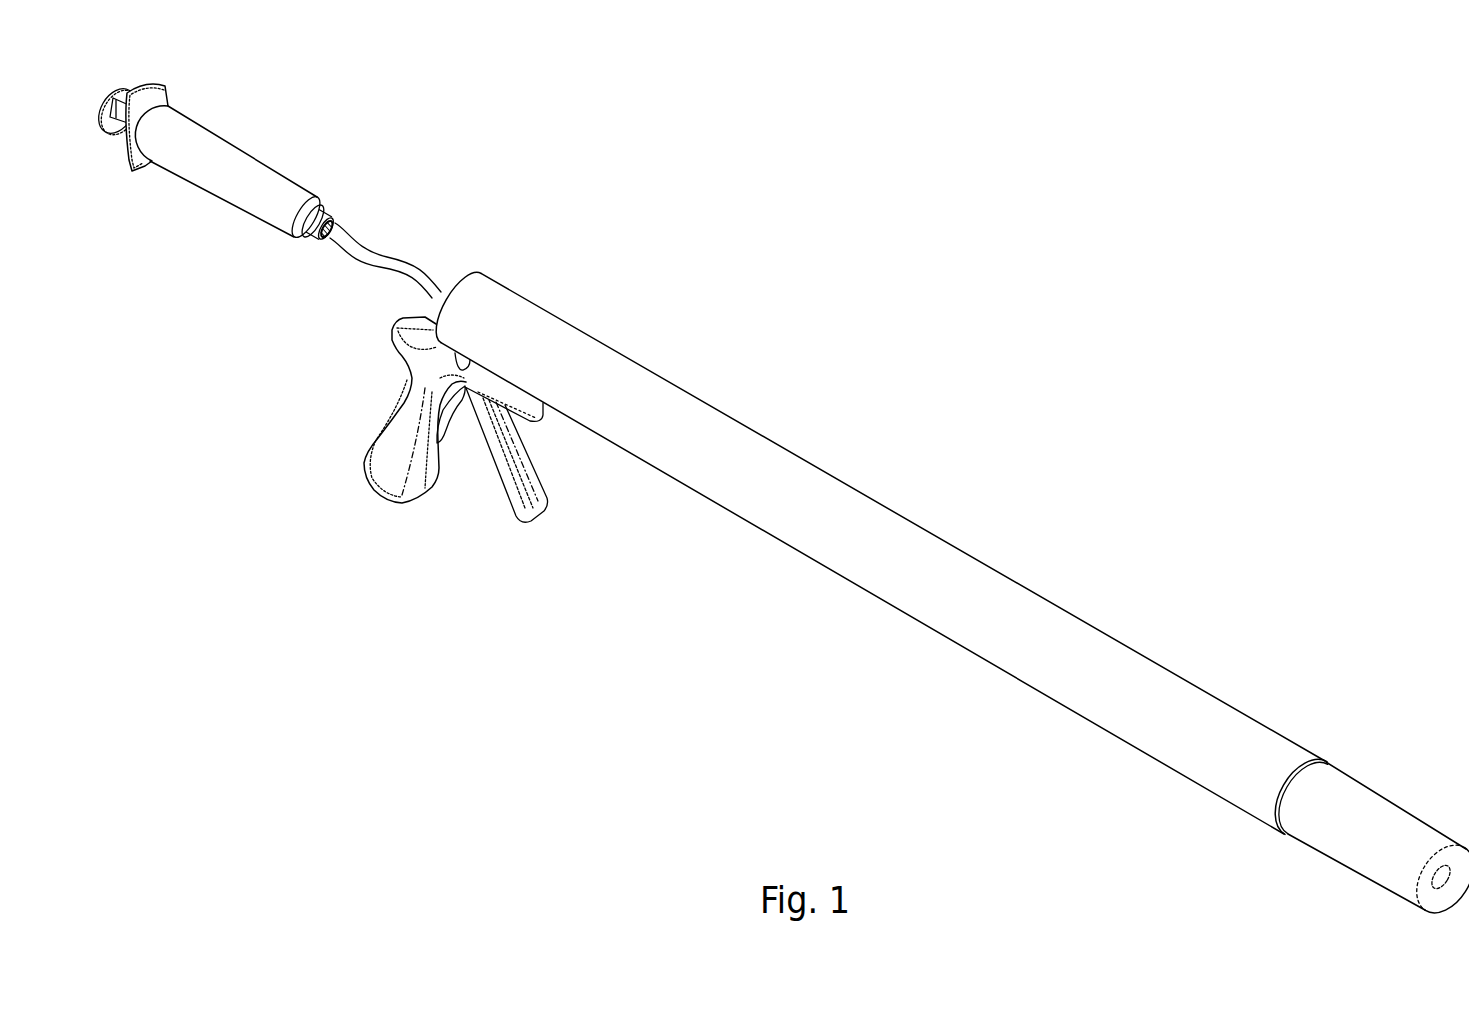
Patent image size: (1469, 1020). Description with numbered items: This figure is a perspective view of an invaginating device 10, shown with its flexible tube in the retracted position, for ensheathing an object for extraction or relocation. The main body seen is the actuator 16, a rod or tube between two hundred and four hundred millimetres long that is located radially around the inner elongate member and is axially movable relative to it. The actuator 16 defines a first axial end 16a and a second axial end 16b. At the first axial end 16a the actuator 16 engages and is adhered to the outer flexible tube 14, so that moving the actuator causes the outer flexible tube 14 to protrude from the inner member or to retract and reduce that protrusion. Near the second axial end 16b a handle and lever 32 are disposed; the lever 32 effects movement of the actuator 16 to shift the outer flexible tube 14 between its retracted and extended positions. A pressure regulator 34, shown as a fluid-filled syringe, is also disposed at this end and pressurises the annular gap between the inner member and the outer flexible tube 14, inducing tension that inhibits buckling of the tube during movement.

The invaginating device 10 is at (1117, 492).
The outer flexible tube 14 is at (1385, 832).
The actuator 16 is at (938, 562).
The first axial end of the actuator 16a is at (1322, 762).
The second axial end of the actuator 16b is at (448, 288).
The handle and lever 32 is at (407, 415).
The pressure regulator 34 is at (225, 152).